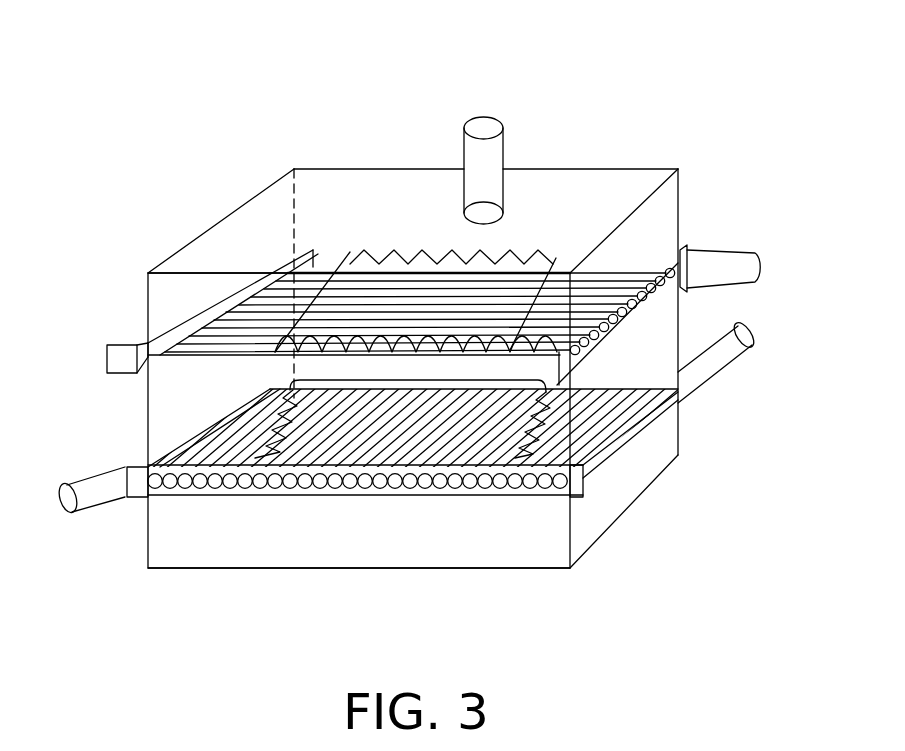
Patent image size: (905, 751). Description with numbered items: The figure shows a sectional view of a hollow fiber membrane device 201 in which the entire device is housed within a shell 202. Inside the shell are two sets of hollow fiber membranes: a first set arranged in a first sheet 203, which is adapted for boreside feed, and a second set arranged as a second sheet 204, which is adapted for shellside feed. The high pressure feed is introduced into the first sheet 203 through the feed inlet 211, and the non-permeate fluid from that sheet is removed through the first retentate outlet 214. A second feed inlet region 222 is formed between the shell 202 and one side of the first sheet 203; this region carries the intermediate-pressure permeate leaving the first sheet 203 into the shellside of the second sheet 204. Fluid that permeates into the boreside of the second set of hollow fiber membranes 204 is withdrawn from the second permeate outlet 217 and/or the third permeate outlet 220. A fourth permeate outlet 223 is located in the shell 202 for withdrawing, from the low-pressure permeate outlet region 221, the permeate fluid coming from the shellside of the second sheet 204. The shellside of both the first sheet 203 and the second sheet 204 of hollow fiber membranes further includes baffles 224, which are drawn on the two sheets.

The hollow fiber membrane device 201 is at (140, 92).
The shell 202 is at (390, 568).
The first sheet 203 is at (583, 478).
The second sheet 204 is at (687, 268).
The feed inlet 211 is at (56, 488).
The first retentate outlet 214 is at (752, 336).
The second permeate outlet 217 is at (762, 266).
The third permeate outlet 220 is at (122, 345).
The low-pressure permeate outlet region 221 is at (633, 237).
The second feed inlet region 222 is at (200, 401).
The fourth permeate outlet 223 is at (504, 128).
The baffles 224 is at (487, 352).